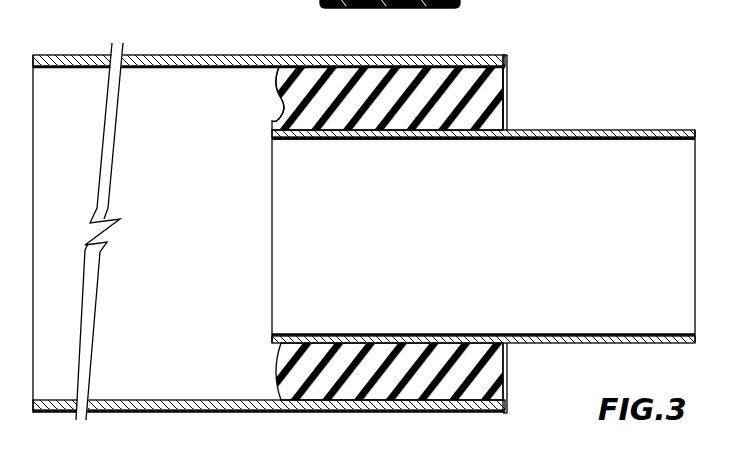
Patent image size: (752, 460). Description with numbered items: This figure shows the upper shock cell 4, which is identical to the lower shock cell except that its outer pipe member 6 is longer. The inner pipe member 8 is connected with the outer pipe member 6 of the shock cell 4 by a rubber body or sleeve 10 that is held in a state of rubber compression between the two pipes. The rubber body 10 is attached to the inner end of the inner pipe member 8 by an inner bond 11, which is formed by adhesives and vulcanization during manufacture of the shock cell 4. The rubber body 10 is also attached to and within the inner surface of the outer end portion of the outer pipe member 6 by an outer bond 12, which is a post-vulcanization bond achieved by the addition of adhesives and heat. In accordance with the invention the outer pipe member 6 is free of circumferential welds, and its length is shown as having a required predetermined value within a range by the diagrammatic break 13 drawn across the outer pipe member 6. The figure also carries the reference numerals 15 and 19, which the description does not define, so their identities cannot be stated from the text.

The upper shock cell 4 is at (519, 118).
The outer pipe member 6 is at (91, 57).
The inner pipe member 8 is at (645, 130).
The rubber body 10 is at (300, 98).
The inner bond 11 is at (440, 130).
The outer bond 12 is at (437, 71).
The diagrammatic break 13 is at (101, 277).
The bottom wall 15 is at (208, 459).
The chamber 19 is at (423, 452).